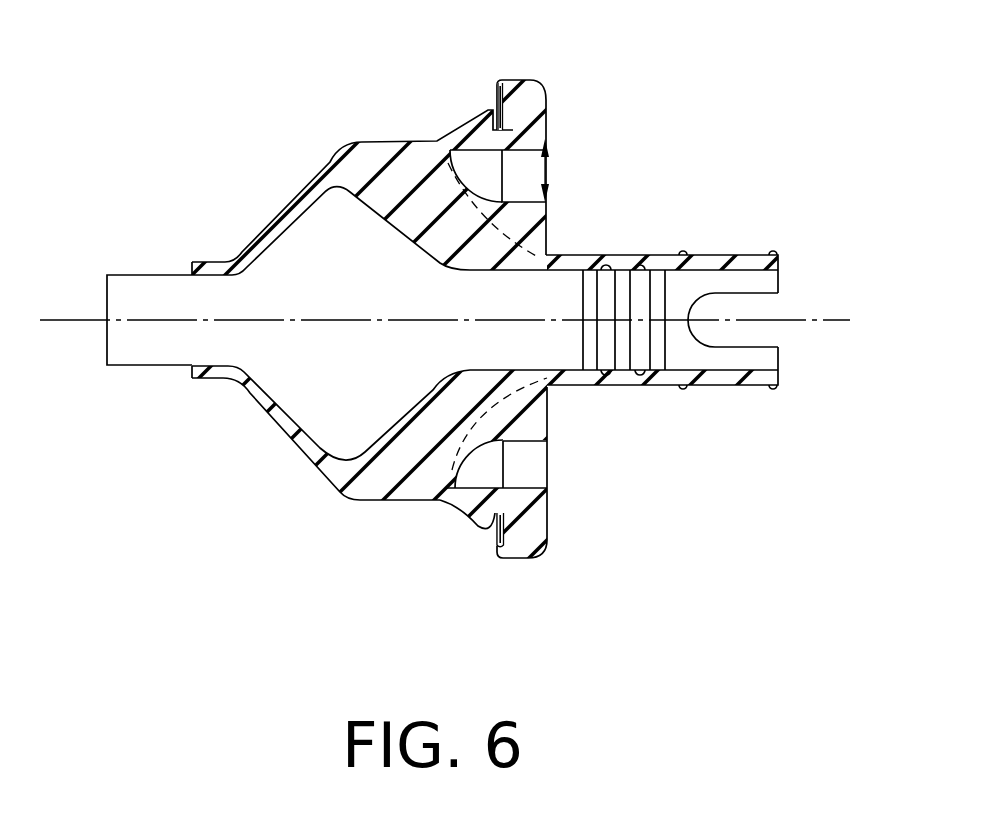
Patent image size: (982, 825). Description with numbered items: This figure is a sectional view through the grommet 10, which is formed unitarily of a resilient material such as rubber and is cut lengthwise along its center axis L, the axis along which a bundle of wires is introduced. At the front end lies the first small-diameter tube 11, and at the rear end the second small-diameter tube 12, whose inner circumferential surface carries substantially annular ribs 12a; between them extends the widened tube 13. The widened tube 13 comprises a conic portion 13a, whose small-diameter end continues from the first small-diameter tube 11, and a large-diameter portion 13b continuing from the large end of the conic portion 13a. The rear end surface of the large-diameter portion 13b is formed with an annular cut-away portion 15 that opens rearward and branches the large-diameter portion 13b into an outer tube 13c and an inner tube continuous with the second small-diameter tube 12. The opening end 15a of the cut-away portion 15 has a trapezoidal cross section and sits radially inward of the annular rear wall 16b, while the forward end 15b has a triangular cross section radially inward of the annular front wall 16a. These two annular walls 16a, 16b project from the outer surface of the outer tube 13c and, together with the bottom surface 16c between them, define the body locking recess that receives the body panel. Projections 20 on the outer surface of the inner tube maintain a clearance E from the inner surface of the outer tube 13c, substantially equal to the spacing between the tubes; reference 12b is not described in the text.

The grommet 10 is at (273, 103).
The first small-diameter tube 11 is at (210, 262).
The second small-diameter tube 12 is at (700, 252).
The annular ribs 12a is at (745, 345).
The ribs of shaft member 12b is at (667, 343).
The widened tube 13 is at (283, 436).
The conic portion 13a is at (255, 407).
The large-diameter portion 13b is at (540, 400).
The outer tube 13c is at (510, 520).
The cut-away portion 15 is at (550, 487).
The opening end 15a is at (548, 488).
The forward end 15b is at (473, 470).
The annular front wall 16a is at (480, 110).
The annular rear wall 16b is at (528, 92).
The bottom surface 16c is at (538, 120).
The projections 20 is at (540, 222).
The clearance E is at (551, 168).
The center axis L is at (78, 322).